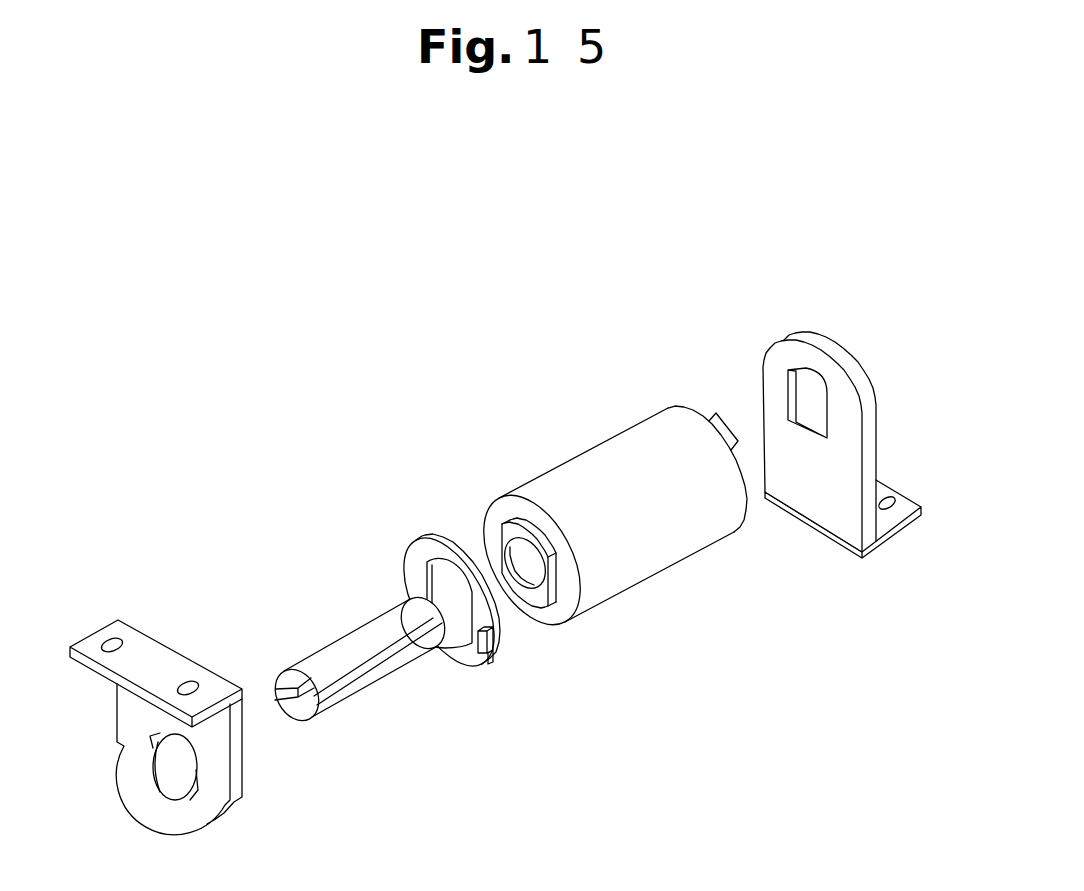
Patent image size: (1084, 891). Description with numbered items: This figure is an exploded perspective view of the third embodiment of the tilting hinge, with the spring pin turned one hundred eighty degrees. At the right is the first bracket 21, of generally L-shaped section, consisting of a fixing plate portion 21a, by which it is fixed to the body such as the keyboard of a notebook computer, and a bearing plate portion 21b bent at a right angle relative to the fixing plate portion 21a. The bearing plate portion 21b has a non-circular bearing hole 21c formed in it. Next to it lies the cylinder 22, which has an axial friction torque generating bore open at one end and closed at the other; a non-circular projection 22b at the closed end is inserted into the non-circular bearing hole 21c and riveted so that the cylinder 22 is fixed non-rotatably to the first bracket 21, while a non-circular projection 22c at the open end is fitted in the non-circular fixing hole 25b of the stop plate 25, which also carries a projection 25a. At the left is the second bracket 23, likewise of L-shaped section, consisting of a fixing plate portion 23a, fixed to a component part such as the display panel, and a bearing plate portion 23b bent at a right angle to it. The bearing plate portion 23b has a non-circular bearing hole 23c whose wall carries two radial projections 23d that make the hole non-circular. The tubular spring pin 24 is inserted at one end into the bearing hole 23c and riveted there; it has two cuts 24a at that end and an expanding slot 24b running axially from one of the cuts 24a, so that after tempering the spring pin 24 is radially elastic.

The first bracket 21 is at (870, 426).
The fixing plate portion 21a is at (898, 509).
The bearing plate portion 21b is at (824, 322).
The non-circular bearing hole 21c is at (797, 405).
The cylinder 22 is at (599, 498).
The projection 22b is at (710, 420).
The projection 22c is at (503, 527).
The second bracket 23 is at (183, 713).
The fixing plate portion 23a is at (87, 643).
The bearing plate portion 23b is at (203, 810).
The non-circular bearing hole 23c is at (165, 787).
The projections 23d is at (150, 753).
The tubular spring pin 24 is at (344, 668).
The cuts 24a is at (273, 692).
The expanding slot 24b is at (387, 656).
The stop plate 25 is at (459, 620).
The projection 25a is at (489, 664).
The non-circular fixing hole 25b is at (447, 667).